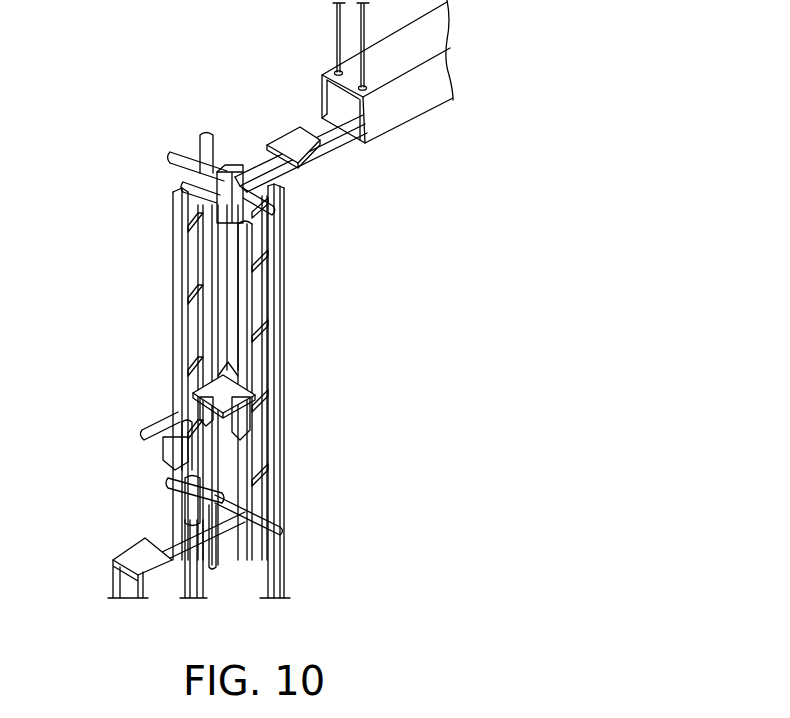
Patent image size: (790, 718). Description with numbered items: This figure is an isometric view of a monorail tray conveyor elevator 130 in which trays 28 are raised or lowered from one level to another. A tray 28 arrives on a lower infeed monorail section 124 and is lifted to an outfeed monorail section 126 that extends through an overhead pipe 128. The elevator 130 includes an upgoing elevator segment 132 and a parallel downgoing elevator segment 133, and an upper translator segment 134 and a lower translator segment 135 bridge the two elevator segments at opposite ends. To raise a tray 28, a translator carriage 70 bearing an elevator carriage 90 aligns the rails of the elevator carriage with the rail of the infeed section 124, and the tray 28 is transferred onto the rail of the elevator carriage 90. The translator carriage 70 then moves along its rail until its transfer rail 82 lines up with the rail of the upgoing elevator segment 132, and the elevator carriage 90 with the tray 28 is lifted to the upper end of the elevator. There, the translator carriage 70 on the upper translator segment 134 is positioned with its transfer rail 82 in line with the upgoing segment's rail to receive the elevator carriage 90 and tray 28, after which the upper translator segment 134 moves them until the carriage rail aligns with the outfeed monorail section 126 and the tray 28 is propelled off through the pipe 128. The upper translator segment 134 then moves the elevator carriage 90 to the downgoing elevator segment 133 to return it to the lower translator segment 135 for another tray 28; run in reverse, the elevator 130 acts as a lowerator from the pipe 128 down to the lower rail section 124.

The elevator 130 is at (105, 264).
The upper translator segment 134 is at (178, 150).
The downgoing elevator segment 133 is at (172, 348).
The upgoing elevator segment 132 is at (250, 360).
The lower translator segment 135 is at (284, 556).
The overhead pipe 128 is at (425, 100).
The outfeed monorail section 126 is at (345, 138).
The elevator carriage 90 is at (255, 420).
The translator carriage 70 is at (183, 500).
The transfer rail 82 is at (218, 520).
The tray 28 is at (140, 545).
The lower infeed monorail section 124 is at (198, 592).